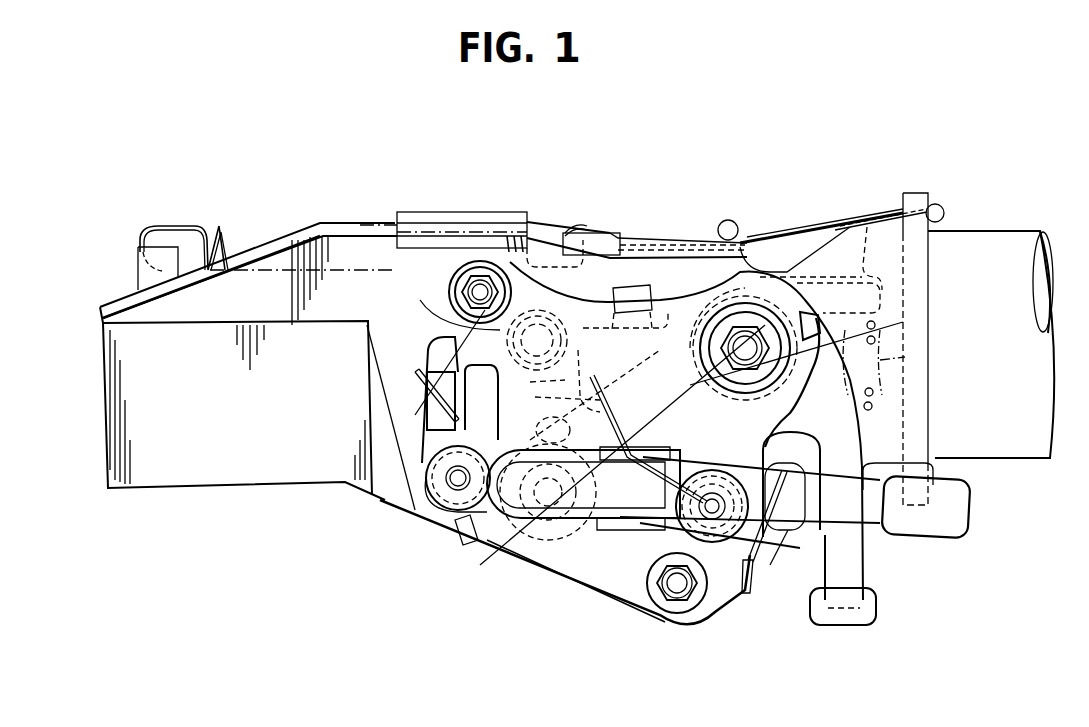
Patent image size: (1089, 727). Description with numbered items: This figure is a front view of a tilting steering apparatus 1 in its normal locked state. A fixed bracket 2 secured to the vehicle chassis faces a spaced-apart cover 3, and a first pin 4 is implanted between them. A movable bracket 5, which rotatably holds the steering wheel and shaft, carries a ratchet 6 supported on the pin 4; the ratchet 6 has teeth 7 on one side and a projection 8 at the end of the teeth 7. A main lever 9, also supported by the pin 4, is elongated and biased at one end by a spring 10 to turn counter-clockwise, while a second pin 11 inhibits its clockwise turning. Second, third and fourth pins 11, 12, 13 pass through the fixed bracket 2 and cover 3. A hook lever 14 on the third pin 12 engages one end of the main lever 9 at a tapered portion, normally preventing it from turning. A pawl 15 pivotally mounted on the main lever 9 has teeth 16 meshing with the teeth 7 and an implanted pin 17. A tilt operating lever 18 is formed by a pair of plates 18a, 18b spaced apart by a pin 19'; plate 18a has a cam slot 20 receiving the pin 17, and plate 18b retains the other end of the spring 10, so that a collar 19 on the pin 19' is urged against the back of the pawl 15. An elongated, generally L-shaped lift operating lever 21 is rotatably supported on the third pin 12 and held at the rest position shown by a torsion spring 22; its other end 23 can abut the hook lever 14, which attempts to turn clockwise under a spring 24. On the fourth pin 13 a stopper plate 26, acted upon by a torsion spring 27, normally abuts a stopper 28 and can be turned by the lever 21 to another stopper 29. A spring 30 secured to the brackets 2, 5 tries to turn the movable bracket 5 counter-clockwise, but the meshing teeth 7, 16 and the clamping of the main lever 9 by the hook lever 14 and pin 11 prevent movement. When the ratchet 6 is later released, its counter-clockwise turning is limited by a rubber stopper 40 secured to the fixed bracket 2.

The engine starter assembly 1 is at (574, 178).
The fixed bracket 2 is at (688, 258).
The cover 3 is at (612, 580).
The first pin 4 is at (748, 345).
The movable bracket 5 is at (915, 192).
The ratchet 6 is at (825, 238).
The teeth 7 is at (628, 380).
The projection 8 is at (690, 525).
The main lever 9 is at (868, 227).
The spring 10 is at (905, 358).
The second pin 11 is at (455, 292).
The third pin 12 is at (440, 498).
The fourth pin 13 is at (750, 595).
The hook lever 14 is at (428, 347).
The pawl 15 is at (605, 310).
The teeth 16 is at (648, 422).
The pin 17 is at (583, 500).
The tilt operating lever 18 is at (830, 612).
The plate 18a is at (860, 568).
The plate 18b is at (937, 438).
The collar 19 is at (581, 592).
The pin 19' is at (518, 589).
The cam slot 20 is at (640, 445).
The lift operating lever 21 is at (955, 530).
The torsion spring 22 is at (508, 545).
The other end 23 is at (438, 367).
The spring 24 is at (412, 382).
The stopper plate 26 is at (788, 545).
The torsion spring 27 is at (778, 565).
The stopper 28 is at (828, 522).
The stopper 29 is at (760, 600).
The spring 30 is at (270, 232).
The rubber stopper 40 is at (790, 470).